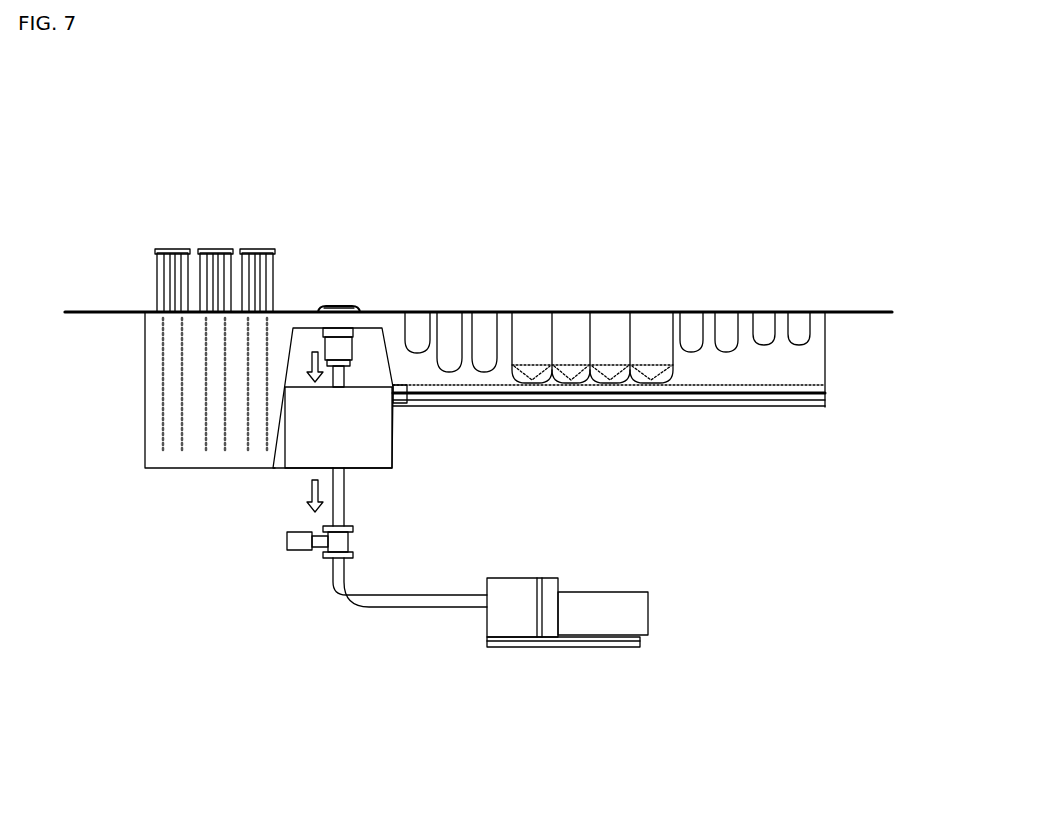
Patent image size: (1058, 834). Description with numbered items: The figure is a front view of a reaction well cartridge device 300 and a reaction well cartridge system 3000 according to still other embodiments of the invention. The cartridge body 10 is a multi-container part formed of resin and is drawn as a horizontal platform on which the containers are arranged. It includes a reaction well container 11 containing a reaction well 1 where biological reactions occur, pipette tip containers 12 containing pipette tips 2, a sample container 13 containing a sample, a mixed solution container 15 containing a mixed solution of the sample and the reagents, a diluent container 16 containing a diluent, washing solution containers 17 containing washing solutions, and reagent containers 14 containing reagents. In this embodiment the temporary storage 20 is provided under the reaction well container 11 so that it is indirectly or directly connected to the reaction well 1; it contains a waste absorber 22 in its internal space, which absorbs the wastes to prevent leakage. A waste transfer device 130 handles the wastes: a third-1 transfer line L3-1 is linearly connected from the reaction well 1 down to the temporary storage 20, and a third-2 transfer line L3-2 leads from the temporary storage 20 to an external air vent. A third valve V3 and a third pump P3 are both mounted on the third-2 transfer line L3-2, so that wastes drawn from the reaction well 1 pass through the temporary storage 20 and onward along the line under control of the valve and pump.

The reaction well cartridge system 3000 is at (475, 181).
The reaction well cartridge device 300 is at (175, 300).
The pipette tips 2 is at (256, 249).
The pipette tip containers 12 is at (190, 372).
The cartridge body 10 is at (872, 303).
The reaction well 1 is at (340, 306).
The reaction well container 11 is at (360, 310).
The sample container 13 is at (418, 310).
The mixed solution container 15 is at (450, 310).
The diluent container 16 is at (487, 310).
The washing solution containers 17 is at (653, 310).
The reagent containers 14 is at (798, 310).
The temporary storage 20 is at (350, 435).
The waste absorber 22 is at (393, 450).
The third-1 transfer line L3-1 is at (348, 375).
The third-2 transfer line L3-2 is at (400, 608).
The third valve V3 is at (297, 552).
The third pump P3 is at (600, 620).
The waste transfer device 130 is at (567, 697).